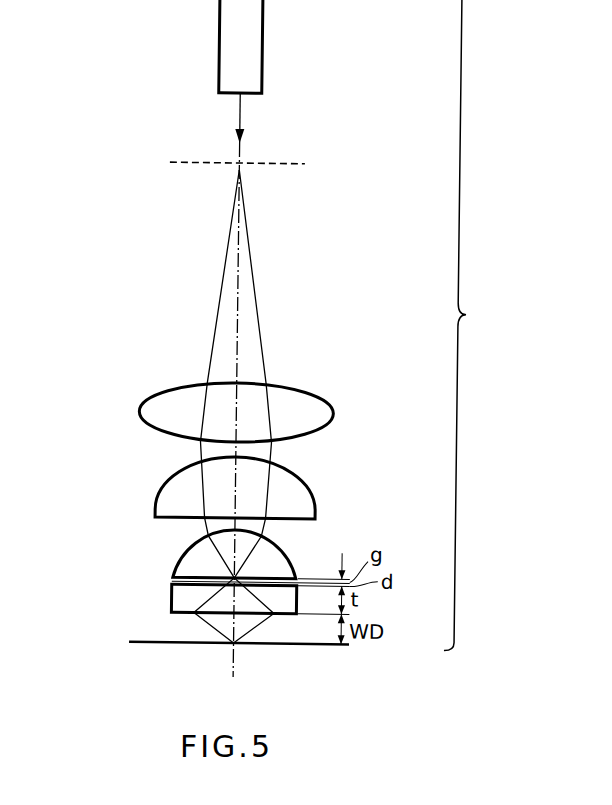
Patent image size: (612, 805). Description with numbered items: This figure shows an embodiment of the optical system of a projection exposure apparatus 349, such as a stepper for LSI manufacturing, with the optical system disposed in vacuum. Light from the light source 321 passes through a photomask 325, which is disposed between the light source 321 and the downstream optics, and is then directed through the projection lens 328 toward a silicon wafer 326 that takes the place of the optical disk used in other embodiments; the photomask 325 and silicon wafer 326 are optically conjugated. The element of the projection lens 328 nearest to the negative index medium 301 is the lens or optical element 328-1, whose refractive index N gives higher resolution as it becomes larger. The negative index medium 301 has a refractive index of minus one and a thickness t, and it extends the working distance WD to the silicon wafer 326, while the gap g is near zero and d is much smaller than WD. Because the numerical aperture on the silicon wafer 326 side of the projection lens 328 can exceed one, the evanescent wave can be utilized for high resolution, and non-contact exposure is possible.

The light source 321 is at (252, 22).
The photomask 325 is at (313, 163).
The projection exposure apparatus 349 is at (480, 325).
The projection lens 328 is at (223, 480).
The lens or optical element nearest to the negative index medium 328-1 is at (281, 565).
The negative index medium 301 is at (182, 596).
The silicon wafer 326 is at (300, 646).